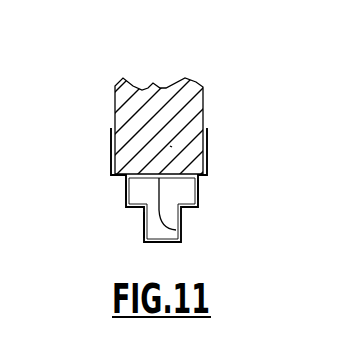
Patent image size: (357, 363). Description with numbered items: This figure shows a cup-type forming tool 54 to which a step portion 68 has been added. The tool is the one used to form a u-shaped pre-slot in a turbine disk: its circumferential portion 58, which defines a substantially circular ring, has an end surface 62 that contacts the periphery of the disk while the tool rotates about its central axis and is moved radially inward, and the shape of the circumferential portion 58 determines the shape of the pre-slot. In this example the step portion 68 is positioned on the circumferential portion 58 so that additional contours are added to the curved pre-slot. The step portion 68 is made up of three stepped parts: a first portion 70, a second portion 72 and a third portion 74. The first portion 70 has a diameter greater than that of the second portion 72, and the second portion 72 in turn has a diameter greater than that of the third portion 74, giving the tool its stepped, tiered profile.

The cup-type forming tool 54 is at (158, 100).
The first portion 70 is at (112, 144).
The circumferential portion 58 is at (172, 147).
The second portion 72 is at (125, 196).
The step portion 68 is at (197, 196).
The third portion 74 is at (145, 228).
The end surface 62 is at (176, 230).